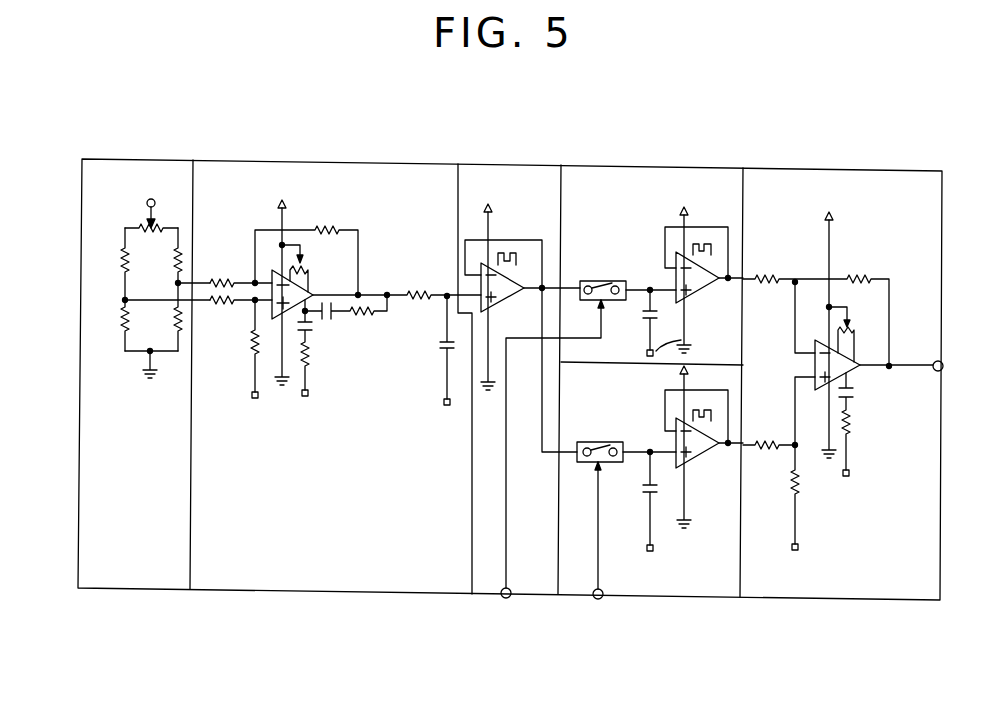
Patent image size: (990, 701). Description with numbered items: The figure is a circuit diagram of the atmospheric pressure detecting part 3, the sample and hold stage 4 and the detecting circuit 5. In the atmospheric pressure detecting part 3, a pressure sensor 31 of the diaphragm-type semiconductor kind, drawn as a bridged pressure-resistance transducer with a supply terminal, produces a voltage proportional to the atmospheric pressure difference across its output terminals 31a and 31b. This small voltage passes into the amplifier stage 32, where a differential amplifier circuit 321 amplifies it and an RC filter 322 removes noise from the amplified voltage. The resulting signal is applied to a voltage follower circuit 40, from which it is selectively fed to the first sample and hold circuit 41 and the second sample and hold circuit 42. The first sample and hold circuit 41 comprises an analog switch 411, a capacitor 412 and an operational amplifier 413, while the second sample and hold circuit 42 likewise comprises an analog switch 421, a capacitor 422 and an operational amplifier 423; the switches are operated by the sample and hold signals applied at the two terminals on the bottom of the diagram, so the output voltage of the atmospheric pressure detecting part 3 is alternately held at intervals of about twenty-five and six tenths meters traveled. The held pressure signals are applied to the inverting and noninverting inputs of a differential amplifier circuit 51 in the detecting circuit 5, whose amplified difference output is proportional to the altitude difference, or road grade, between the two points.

The atmospheric pressure detecting part 3 is at (307, 592).
The pressure sensor 31 is at (131, 160).
The output terminal 31a is at (207, 285).
The output terminal 31b is at (205, 303).
The differential amplifier 32 is at (383, 164).
The differential amplifier circuit 321 is at (306, 286).
The RC filter 322 is at (436, 303).
The sample and hold stage 4 is at (568, 598).
The voltage follower circuit 40 is at (536, 166).
The first sample and hold circuit 41 is at (647, 167).
The analog switch 411 is at (590, 281).
The capacitor 412 is at (645, 313).
The operational amplifier 413 is at (672, 270).
The second sample and hold circuit 42 is at (655, 599).
The analog switch 421 is at (592, 442).
The capacitor 422 is at (646, 478).
The operational amplifier 423 is at (702, 457).
The detecting circuit 5 is at (835, 600).
The differential amplifier circuit 51 is at (852, 370).